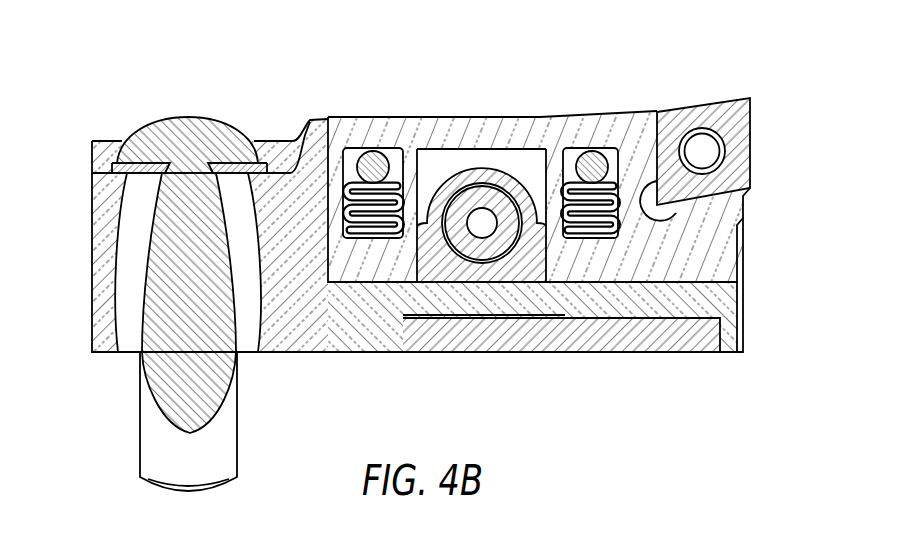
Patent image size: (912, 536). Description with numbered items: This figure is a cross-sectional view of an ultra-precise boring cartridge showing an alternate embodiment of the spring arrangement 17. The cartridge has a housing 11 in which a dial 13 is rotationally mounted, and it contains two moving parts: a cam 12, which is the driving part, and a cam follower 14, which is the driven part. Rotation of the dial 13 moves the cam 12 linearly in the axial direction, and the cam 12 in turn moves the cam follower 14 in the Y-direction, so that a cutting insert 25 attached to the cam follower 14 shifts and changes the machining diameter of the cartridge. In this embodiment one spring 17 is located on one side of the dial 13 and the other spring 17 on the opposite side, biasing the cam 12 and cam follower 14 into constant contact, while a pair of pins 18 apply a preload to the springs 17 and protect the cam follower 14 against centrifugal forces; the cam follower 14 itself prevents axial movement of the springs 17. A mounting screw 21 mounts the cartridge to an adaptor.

The housing 11 is at (87, 292).
The cam 12 is at (503, 295).
The dial 13 is at (480, 265).
The cam follower 14 is at (512, 112).
The spring arrangement 17 is at (378, 243).
The pins 18 is at (360, 157).
The mounting screw 21 is at (134, 430).
The cutting insert 25 is at (757, 127).